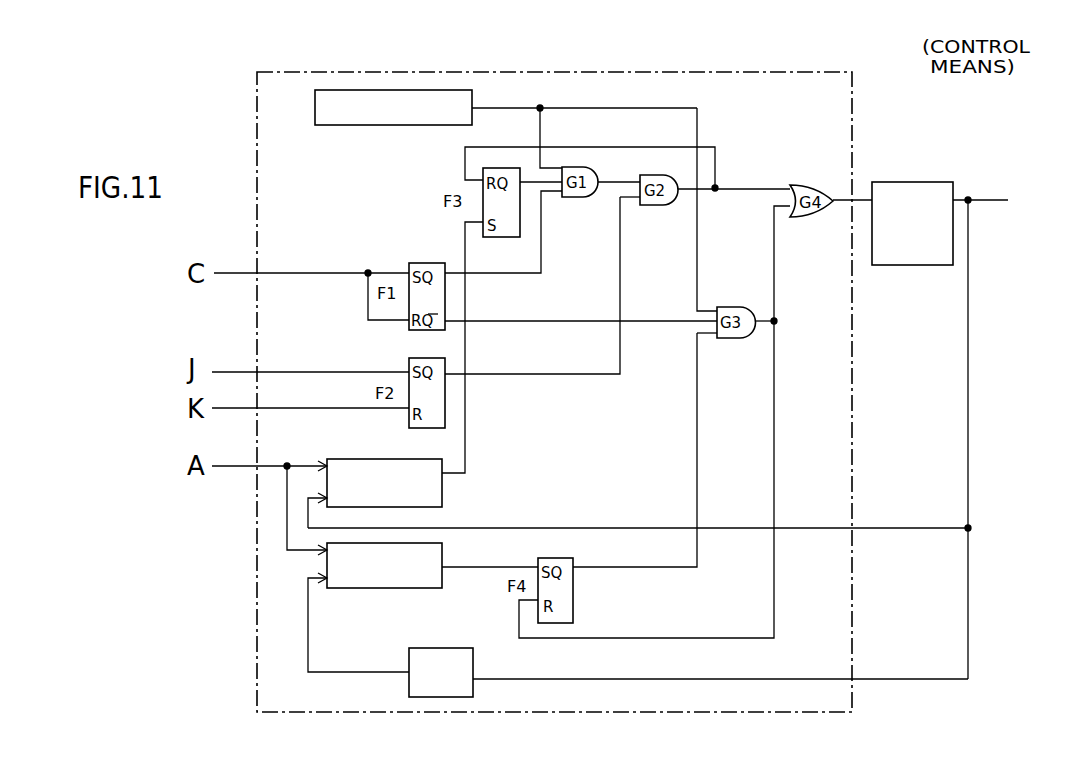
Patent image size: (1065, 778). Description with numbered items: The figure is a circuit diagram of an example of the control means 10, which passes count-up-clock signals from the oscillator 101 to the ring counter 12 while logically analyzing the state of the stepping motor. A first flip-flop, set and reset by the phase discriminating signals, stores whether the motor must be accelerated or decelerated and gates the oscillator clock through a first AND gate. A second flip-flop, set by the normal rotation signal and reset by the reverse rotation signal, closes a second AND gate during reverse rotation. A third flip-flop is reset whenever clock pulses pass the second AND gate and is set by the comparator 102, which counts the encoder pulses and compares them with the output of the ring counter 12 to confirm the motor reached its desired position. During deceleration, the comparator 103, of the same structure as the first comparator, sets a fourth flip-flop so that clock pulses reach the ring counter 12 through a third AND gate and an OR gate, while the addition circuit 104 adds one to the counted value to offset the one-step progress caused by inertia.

The control means 10 is at (864, 102).
The ring counter 12 is at (915, 267).
The oscillator 101 is at (422, 127).
The comparator 102 is at (442, 490).
The comparator 103 is at (442, 583).
The addition circuit 104 is at (409, 648).